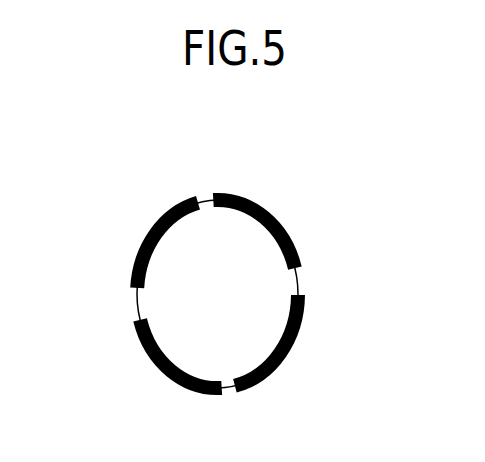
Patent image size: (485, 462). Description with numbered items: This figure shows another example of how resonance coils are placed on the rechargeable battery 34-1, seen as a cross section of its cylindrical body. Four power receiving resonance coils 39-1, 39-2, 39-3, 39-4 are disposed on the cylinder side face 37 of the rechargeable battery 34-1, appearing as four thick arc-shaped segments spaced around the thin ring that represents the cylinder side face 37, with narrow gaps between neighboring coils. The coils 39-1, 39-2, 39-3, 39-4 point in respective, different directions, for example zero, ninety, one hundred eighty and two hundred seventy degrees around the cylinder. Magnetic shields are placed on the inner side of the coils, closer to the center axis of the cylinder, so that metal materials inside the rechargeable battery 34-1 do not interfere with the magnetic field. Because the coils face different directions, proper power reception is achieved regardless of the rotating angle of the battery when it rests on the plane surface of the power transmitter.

The rechargeable battery 34-1 is at (268, 180).
The cylinder side face 37 is at (300, 278).
The power receiving resonance coil 39-1 is at (147, 237).
The power receiving resonance coil 39-2 is at (290, 247).
The power receiving resonance coil 39-3 is at (290, 350).
The power receiving resonance coil 39-4 is at (163, 375).